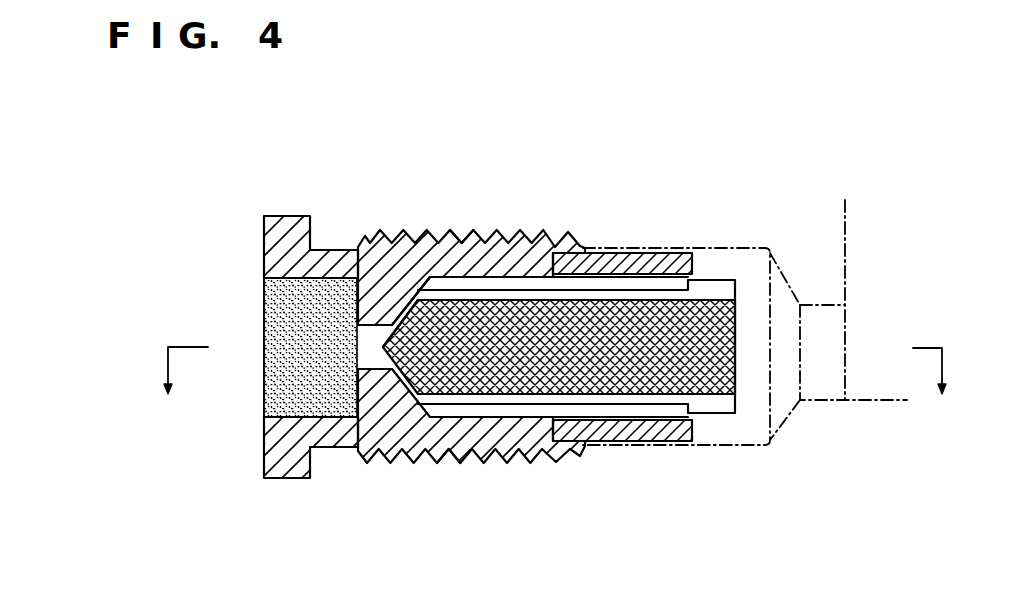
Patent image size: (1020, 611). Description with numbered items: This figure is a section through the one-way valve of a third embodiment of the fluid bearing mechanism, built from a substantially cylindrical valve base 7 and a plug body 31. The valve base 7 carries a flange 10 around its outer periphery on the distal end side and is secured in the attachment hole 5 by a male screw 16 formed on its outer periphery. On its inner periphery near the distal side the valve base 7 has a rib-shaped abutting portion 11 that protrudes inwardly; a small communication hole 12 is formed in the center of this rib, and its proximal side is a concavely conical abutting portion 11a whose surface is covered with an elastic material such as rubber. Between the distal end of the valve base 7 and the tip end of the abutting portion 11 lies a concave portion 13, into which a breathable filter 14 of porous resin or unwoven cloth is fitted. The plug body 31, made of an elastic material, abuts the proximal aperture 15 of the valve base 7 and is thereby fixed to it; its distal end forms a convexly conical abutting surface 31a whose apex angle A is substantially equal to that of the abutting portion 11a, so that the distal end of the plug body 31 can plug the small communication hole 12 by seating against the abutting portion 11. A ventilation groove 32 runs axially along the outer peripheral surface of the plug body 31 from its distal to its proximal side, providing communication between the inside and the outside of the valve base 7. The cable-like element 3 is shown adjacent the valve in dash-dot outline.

The cable 3 is at (890, 323).
The attachment hole 5 is at (645, 248).
The valve base 7 is at (496, 449).
The flange 10 is at (270, 203).
The abutting portion 11 is at (392, 432).
The abutting portion 11a is at (410, 318).
The small communication hole 12 is at (374, 350).
The concave portion 13 is at (265, 400).
The breathable filter 14 is at (265, 402).
The proximal aperture 15 is at (697, 257).
The male screw 16 is at (482, 236).
The plug body 31 is at (477, 300).
The abutting surface 31a is at (396, 224).
The ventilation groove 32 is at (550, 289).
The apex angle A is at (400, 310).